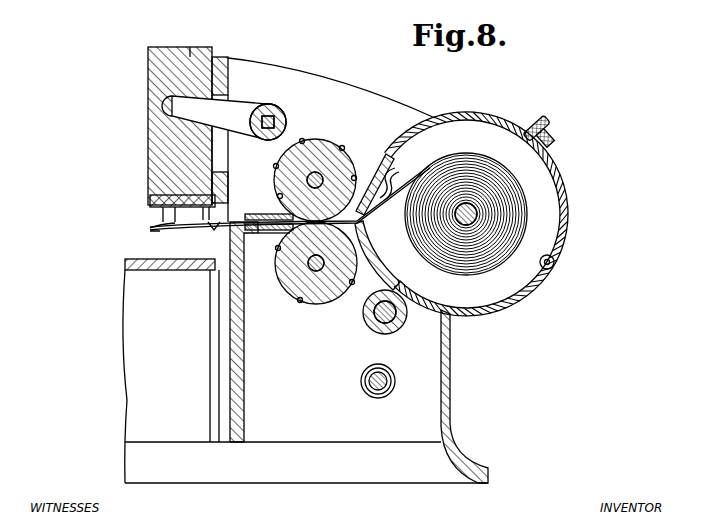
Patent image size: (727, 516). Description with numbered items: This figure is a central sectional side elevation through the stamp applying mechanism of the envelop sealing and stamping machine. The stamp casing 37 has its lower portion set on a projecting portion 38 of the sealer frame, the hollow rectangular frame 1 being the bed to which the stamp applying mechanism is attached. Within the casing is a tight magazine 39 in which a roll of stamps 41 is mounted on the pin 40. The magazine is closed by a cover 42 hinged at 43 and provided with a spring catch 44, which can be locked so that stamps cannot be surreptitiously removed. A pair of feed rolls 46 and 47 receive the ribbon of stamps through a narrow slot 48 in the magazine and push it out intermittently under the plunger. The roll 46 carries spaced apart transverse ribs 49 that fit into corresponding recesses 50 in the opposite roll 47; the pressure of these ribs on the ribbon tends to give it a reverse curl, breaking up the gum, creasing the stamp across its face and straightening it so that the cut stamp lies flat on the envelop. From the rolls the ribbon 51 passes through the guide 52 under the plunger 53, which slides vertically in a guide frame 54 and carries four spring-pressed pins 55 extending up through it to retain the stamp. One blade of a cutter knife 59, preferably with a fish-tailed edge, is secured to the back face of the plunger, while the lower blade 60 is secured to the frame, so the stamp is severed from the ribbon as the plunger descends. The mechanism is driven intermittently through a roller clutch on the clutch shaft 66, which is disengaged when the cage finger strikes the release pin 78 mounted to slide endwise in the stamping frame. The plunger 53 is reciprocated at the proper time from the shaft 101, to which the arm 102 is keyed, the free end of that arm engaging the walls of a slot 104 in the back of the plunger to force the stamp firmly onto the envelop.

The frame 1 is at (125, 262).
The stamp casing 37 is at (452, 390).
The projecting portion 38 is at (320, 480).
The magazine 39 is at (524, 297).
The pin 40 is at (467, 226).
The roll of stamps 41 is at (455, 180).
The cover 42 is at (553, 178).
The hinge 43 is at (555, 262).
The spring catch 44 is at (384, 182).
The feed roll 46 is at (308, 142).
The feed roll 47 is at (324, 305).
The slot 48 is at (362, 219).
The transverse ribs 49 is at (275, 163).
The recesses 50 is at (286, 252).
The ribbon 51 is at (212, 224).
The guide 52 is at (262, 212).
The plunger 53 is at (152, 148).
The guide frame 54 is at (168, 230).
The pins 55 is at (170, 213).
The cutter knife blade 59 is at (210, 188).
The lower blade 60 is at (244, 256).
The clutch shaft 66 is at (388, 326).
The release pin 78 is at (386, 392).
The shaft 101 is at (274, 118).
The arm 102 is at (216, 112).
The slot 104 is at (190, 52).